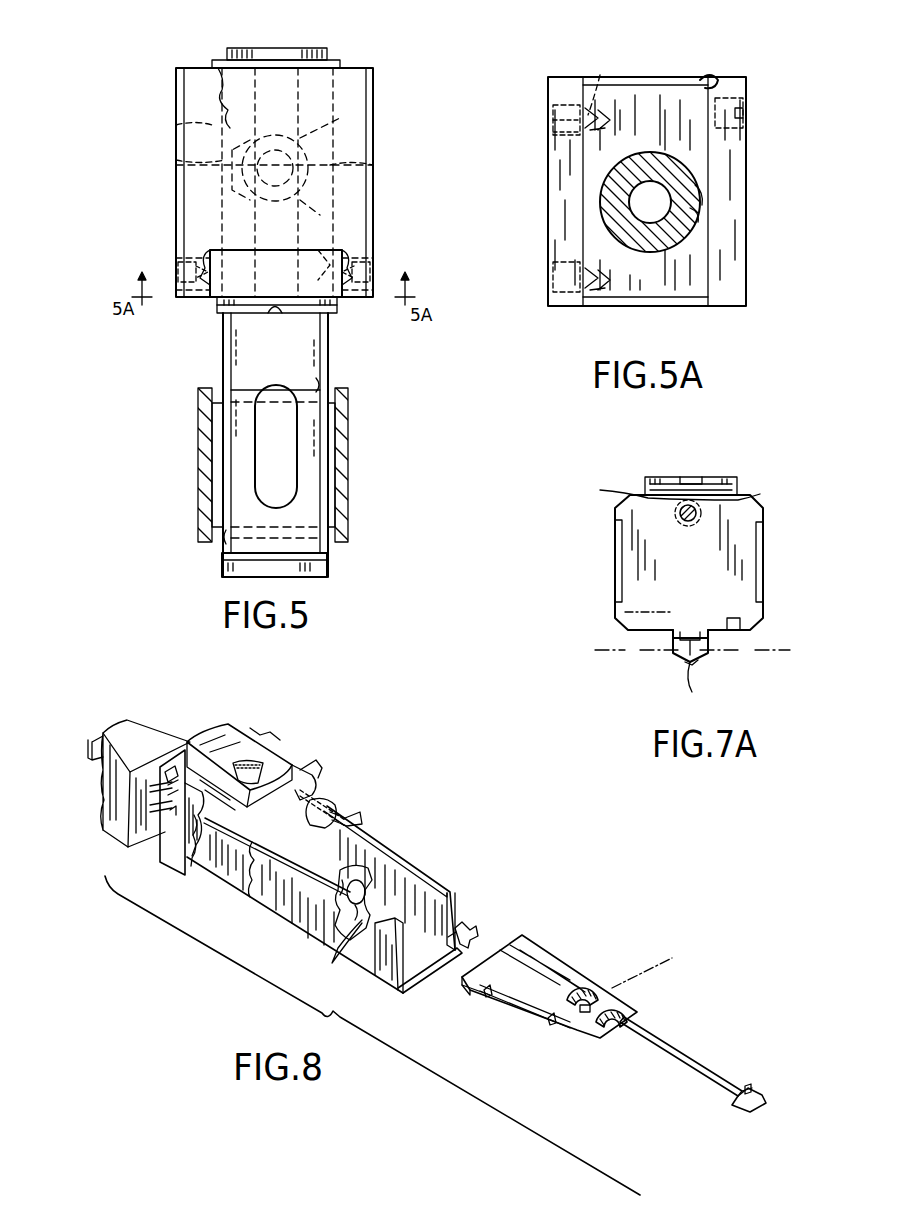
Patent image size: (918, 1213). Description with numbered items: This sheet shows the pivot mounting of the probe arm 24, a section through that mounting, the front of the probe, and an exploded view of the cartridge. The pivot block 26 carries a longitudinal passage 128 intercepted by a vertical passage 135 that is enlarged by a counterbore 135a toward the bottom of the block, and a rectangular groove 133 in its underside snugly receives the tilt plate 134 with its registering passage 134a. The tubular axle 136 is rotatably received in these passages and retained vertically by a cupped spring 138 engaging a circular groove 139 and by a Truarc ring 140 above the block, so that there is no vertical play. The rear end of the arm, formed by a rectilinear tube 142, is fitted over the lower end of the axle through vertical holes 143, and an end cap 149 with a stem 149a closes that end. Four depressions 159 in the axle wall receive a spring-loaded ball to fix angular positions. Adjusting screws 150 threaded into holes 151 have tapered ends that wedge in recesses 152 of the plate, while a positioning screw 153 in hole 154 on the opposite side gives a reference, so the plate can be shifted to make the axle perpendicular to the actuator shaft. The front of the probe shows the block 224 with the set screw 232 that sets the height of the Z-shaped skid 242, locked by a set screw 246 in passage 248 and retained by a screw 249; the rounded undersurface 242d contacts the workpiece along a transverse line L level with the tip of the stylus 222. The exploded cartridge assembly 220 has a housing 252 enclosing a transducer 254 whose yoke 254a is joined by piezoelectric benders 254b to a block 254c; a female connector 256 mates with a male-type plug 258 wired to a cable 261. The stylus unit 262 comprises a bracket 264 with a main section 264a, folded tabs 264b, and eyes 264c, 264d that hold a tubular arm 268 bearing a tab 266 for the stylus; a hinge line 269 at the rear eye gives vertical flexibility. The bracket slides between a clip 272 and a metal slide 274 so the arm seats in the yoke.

In FIG. 5, the probe arm 24 is at (164, 426).
In FIG. 5, the pivot block 26 is at (180, 190).
In FIG. 5A, the pivot block 26 is at (720, 268).
In FIG. 5, the longitudinal passage 128 is at (340, 118).
In FIG. 5, the rectangular groove 133 is at (210, 252).
In FIG. 5A, the rectangular groove 133 is at (722, 64).
In FIG. 5, the tilt plate 134 is at (340, 300).
In FIG. 5A, the tilt plate 134 is at (670, 88).
In FIG. 5, the registering passage 134a is at (330, 265).
In FIG. 5A, the registering passage 134a is at (700, 210).
In FIG. 5, the vertical passage 135 is at (208, 72).
In FIG. 5, the counterbore 135a is at (176, 125).
In FIG. 5, the tubular axle 136 is at (316, 358).
In FIG. 5A, the tubular axle 136 is at (695, 182).
In FIG. 5, the cupped spring 138 is at (217, 300).
In FIG. 5, the circular groove 139 is at (276, 310).
In FIG. 5, the Truarc ring 140 is at (330, 60).
In FIG. 5, the rectilinear tube 142 is at (198, 466).
In FIG. 5, the vertical holes 143 is at (320, 385).
In FIG. 5, the end cap 149 is at (320, 565).
In FIG. 5A, the stem 149a is at (610, 62).
In FIG. 5, the adjusting screws 150 is at (178, 266).
In FIG. 5A, the adjusting screws 150 is at (553, 118).
In FIG. 5, the holes 151 is at (192, 276).
In FIG. 5A, the holes 151 is at (553, 134).
In FIG. 5A, the recesses 152 is at (588, 122).
In FIG. 5, the positioning screw 153 is at (358, 280).
In FIG. 5A, the positioning screw 153 is at (738, 106).
In FIG. 5, the hole 154 is at (370, 266).
In FIG. 5A, the hole 154 is at (744, 116).
In FIG. 5, the depressions 159 is at (176, 160).
In FIG. 8, the cartridge assembly 220 is at (324, 753).
In FIG. 7A, the stylus 222 is at (686, 655).
In FIG. 8, the stylus 222 is at (470, 925).
In FIG. 7A, the block 224 is at (752, 520).
In FIG. 7A, the set screw 232 is at (648, 490).
In FIG. 7A, the skid 242 is at (708, 640).
In FIG. 7A, the rounded undersurface 242d is at (696, 662).
In FIG. 7A, the set screw 246 is at (656, 489).
In FIG. 7A, the passage 248 is at (728, 512).
In FIG. 7A, the screw 249 is at (708, 482).
In FIG. 8, the housing 252 is at (315, 930).
In FIG. 8, the transducer 254 is at (210, 896).
In FIG. 8, the yoke 254a is at (358, 872).
In FIG. 8, the piezoelectric benders 254b is at (356, 940).
In FIG. 8, the block 254c is at (246, 898).
In FIG. 8, the female connector 256 is at (192, 740).
In FIG. 8, the male-type plug 258 is at (147, 728).
In FIG. 8, the cable 261 is at (108, 728).
In FIG. 8, the stylus unit 262 is at (600, 954).
In FIG. 8, the bracket 264 is at (312, 800).
In FIG. 8, the main section 264a is at (525, 1018).
In FIG. 8, the tabs 264b is at (478, 992).
In FIG. 8, the eye 264c is at (628, 1022).
In FIG. 8, the eye 264d is at (600, 996).
In FIG. 8, the tab 266 is at (742, 1105).
In FIG. 8, the tubular arm 268 is at (415, 910).
In FIG. 8, the hinge line 269 is at (630, 978).
In FIG. 8, the clip 272 is at (250, 748).
In FIG. 8, the metal slide 274 is at (310, 782).
In FIG. 7A, the transverse line L is at (689, 687).